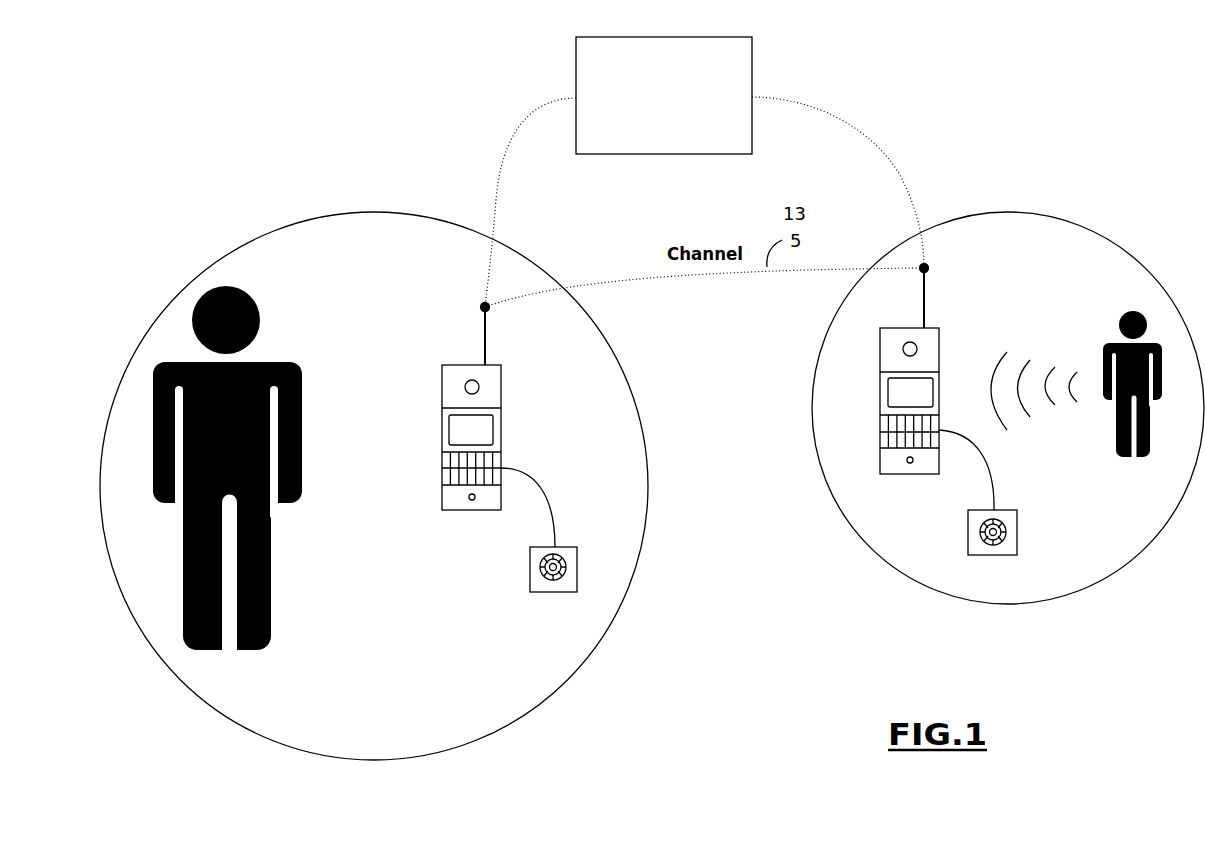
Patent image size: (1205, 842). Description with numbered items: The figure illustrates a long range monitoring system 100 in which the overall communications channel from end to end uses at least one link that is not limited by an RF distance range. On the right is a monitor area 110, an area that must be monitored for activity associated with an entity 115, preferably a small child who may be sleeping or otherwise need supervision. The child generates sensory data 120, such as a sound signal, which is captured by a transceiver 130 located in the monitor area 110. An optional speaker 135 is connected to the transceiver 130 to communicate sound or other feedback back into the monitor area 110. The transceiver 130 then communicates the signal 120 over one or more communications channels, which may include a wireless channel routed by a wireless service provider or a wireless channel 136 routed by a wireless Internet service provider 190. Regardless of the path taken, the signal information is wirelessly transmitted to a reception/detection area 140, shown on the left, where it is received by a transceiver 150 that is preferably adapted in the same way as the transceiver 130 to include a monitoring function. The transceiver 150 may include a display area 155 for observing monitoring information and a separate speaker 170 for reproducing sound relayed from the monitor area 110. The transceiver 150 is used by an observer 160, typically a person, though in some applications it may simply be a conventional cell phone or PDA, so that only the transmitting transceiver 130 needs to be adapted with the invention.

The long range monitoring system 100 is at (740, 663).
The monitor area 110 is at (1036, 246).
The entity 115 is at (1102, 315).
The sensory data 120 is at (1018, 335).
The transceiver 130 is at (870, 357).
The speaker 135 is at (968, 537).
The wireless channel 136 is at (807, 102).
The reception/detection area 140 is at (392, 252).
The transceiver 150 is at (429, 407).
The display area 155 is at (449, 431).
The observer 160 is at (275, 343).
The speaker 170 is at (520, 577).
The wireless Internet service provider 190 is at (744, 150).